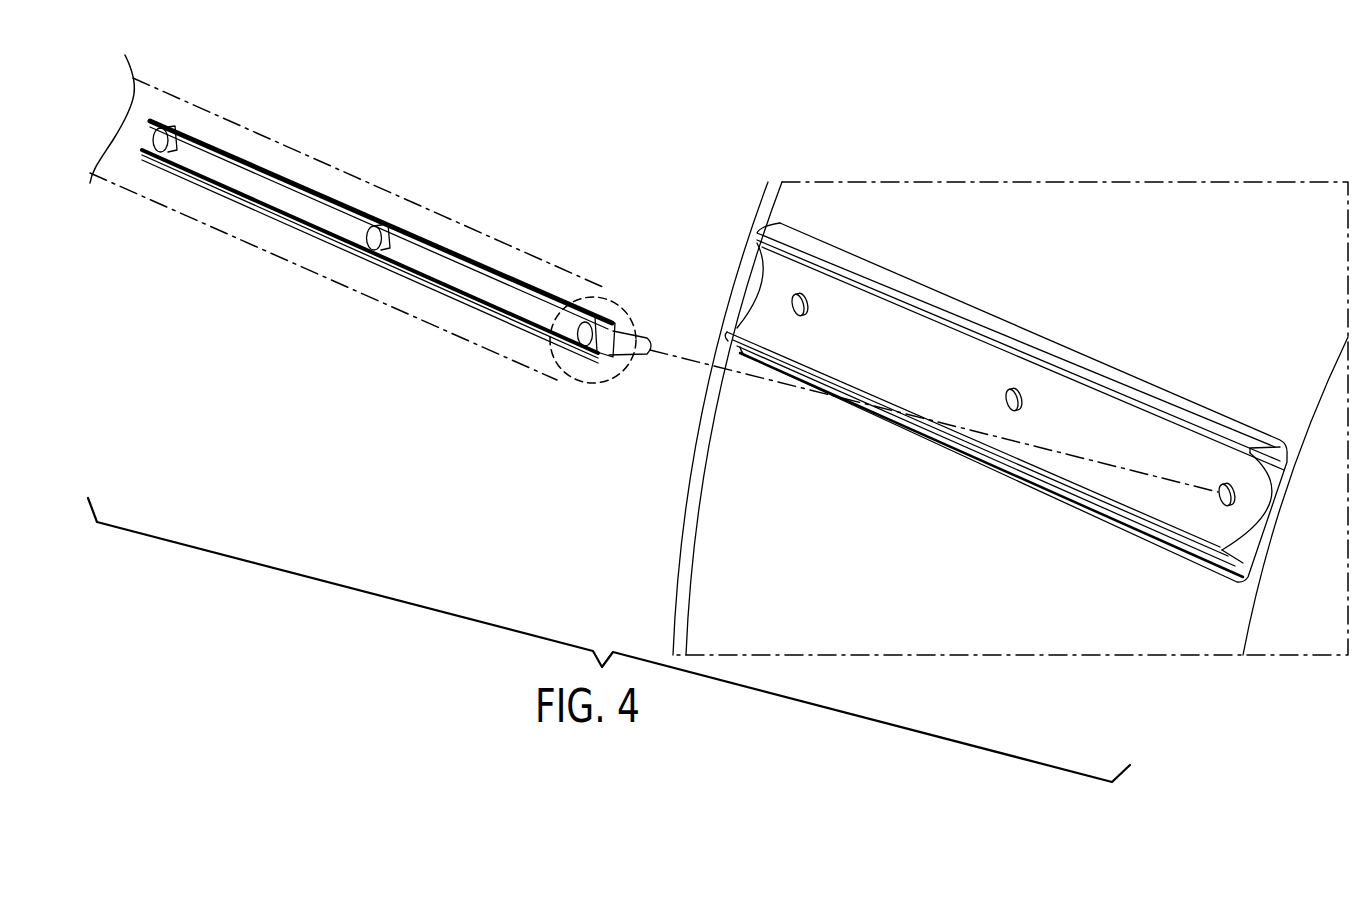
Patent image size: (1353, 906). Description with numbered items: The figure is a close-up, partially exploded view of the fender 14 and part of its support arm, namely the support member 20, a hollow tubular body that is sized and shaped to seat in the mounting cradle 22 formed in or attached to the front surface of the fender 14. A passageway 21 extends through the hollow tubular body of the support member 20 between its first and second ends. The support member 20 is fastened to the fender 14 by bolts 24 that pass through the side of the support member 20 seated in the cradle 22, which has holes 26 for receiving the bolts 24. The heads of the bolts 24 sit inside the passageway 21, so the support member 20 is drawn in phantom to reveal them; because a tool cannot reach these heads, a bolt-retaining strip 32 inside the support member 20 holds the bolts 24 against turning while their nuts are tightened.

The fender 14 is at (727, 552).
The support member 20 is at (213, 227).
The passageway 21 is at (580, 368).
The mounting cradle 22 is at (937, 308).
The bolts 24 is at (167, 128).
The holes 26 is at (808, 307).
The bolt-retaining strip 32 is at (270, 187).